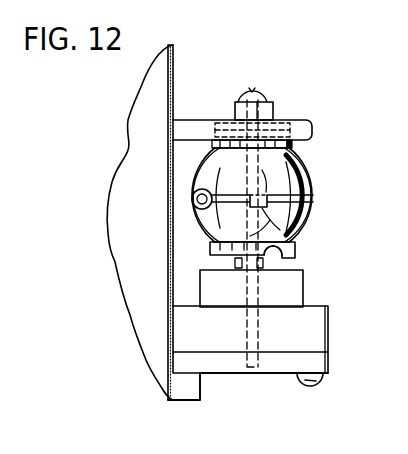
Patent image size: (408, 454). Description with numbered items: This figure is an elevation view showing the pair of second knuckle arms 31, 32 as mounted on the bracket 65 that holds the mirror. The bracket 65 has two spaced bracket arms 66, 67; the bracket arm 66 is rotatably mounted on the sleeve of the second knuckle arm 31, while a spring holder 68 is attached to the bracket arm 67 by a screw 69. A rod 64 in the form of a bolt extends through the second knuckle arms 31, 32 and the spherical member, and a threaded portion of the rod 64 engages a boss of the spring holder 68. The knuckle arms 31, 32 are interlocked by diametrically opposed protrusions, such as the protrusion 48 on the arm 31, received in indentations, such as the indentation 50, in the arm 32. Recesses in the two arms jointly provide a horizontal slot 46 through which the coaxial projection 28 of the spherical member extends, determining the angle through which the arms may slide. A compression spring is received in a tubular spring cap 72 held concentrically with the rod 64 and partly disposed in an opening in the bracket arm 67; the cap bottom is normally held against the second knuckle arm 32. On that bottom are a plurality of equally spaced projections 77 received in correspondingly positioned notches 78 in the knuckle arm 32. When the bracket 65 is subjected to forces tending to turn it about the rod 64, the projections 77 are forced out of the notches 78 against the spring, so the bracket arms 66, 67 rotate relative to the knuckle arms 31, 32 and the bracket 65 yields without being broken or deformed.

The bracket 65 is at (128, 147).
The bracket arm 66 is at (302, 122).
The second knuckle arm 31 is at (302, 158).
The second knuckle arm 32 is at (313, 198).
The protrusion 48 is at (264, 194).
The indentation 50 is at (277, 227).
The horizontal slot 46 is at (193, 193).
The coaxial projection 28 is at (195, 203).
The projections 77 is at (233, 262).
The notches 78 is at (278, 262).
The spring cap 72 is at (207, 288).
The bracket arm 67 is at (320, 333).
The spring holder 68 is at (275, 368).
The screw 69 is at (322, 385).
The rod 64 is at (248, 357).